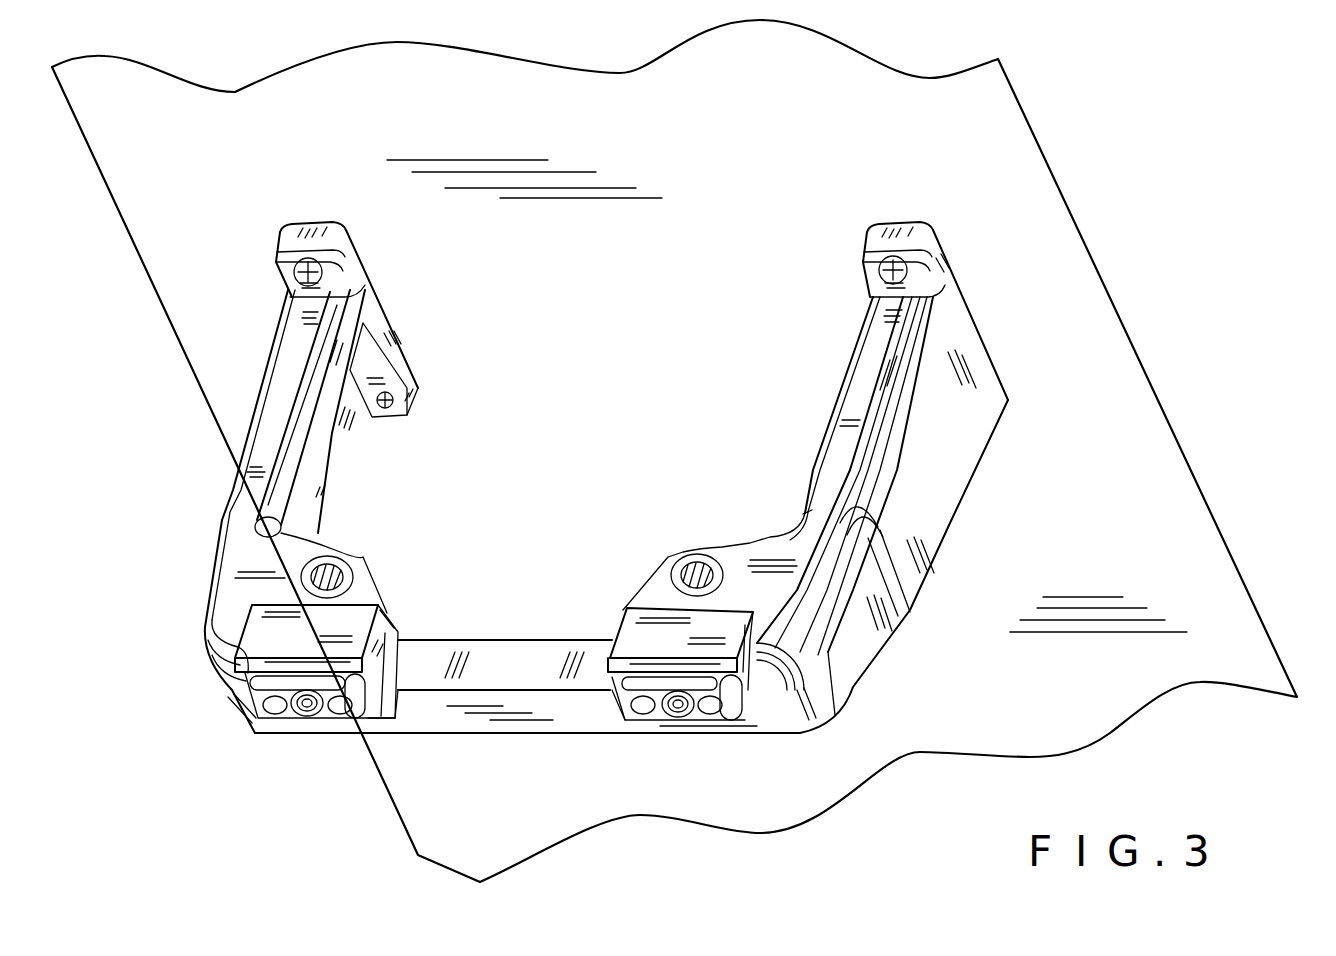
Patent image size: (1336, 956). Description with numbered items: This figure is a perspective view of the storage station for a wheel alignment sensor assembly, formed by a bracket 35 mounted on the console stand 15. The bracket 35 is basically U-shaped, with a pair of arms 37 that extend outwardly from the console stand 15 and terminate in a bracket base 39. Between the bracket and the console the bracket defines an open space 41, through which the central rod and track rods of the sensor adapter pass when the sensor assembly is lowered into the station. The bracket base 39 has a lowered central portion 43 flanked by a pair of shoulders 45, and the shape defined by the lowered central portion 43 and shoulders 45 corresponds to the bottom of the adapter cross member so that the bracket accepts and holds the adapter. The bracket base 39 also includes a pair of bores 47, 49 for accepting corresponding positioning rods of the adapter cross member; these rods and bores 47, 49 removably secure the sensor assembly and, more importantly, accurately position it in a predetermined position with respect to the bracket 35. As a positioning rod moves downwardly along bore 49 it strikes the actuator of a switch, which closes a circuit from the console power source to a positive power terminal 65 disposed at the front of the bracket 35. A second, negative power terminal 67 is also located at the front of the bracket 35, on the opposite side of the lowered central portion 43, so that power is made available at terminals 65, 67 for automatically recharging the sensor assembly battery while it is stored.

The console stand 15 is at (601, 338).
The bracket 35 is at (910, 656).
The arms 37 is at (354, 460).
The bracket base 39 is at (600, 725).
The open space 41 is at (622, 448).
The lowered central portion 43 is at (505, 658).
The shoulders 45 is at (300, 649).
The bore 47 is at (330, 568).
The bore 49 is at (693, 560).
The positive power terminal 65 is at (678, 712).
The negative power terminal 67 is at (308, 714).